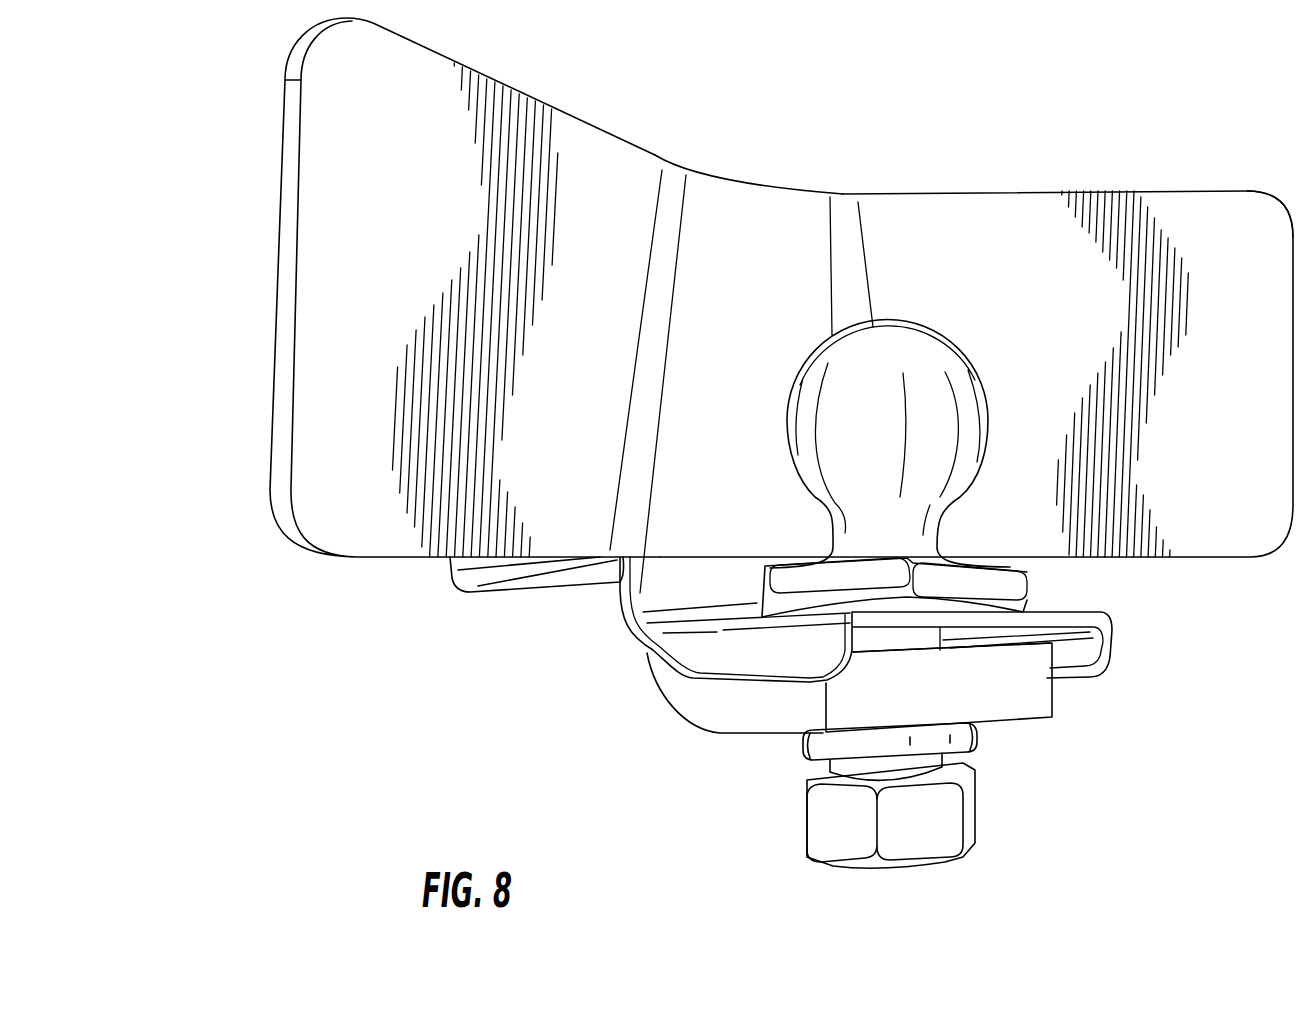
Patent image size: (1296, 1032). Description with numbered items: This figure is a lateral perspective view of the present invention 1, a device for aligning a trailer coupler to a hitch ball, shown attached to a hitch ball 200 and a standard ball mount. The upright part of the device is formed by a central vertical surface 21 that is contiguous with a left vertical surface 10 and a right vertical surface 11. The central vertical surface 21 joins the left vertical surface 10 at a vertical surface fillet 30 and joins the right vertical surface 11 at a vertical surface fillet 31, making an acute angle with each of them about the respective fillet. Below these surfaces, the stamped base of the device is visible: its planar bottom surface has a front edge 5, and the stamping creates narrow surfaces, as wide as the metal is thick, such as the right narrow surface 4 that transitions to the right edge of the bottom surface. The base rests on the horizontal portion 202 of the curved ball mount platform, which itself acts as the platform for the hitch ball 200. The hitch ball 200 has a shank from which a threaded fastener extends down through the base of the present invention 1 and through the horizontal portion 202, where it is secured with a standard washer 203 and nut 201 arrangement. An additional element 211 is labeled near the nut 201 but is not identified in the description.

The present invention 1 is at (1233, 126).
The left vertical surface 10 is at (543, 147).
The right vertical surface 11 is at (1120, 277).
The central vertical surface 21 is at (780, 253).
The vertical surface fillet 30 is at (677, 190).
The vertical surface fillet 31 is at (840, 221).
The hitch ball 200 is at (938, 427).
The right narrow surface 4 is at (737, 653).
The horizontal portion of ball mount platform 202 is at (773, 717).
The front edge 5 is at (1033, 617).
The standard washer 203 is at (975, 742).
The nut 201 is at (905, 846).
The nut faces 211 is at (840, 867).